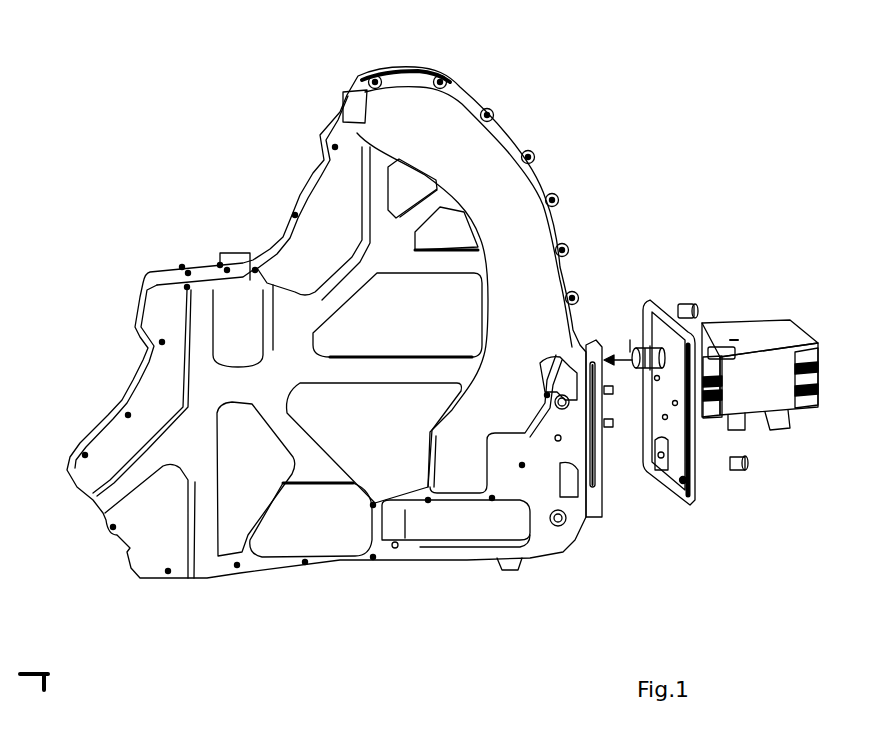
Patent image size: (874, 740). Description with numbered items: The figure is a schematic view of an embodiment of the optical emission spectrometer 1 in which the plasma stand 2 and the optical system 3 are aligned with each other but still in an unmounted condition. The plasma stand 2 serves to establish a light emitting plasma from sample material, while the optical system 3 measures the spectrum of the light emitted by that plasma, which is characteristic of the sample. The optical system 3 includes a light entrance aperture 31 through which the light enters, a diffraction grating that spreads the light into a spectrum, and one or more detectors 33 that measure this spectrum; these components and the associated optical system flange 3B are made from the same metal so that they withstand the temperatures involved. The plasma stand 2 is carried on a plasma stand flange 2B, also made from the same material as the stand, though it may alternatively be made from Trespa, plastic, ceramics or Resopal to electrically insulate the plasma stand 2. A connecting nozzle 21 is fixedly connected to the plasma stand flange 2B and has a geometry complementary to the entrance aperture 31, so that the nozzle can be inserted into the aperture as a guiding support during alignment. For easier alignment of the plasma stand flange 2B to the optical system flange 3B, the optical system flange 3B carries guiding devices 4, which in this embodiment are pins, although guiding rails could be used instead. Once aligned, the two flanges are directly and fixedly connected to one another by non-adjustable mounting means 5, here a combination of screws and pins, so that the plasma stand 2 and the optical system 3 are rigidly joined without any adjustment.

The optical emission spectrometer 1 is at (126, 176).
The plasma stand 2 is at (775, 383).
The plasma stand flange 2B is at (687, 487).
The optical system 3 is at (340, 215).
The optical system flange 3B is at (595, 490).
The guiding devices 4 is at (608, 427).
The non-adjustable mounting means 5 is at (685, 300).
The connecting nozzle 21 is at (657, 357).
The light entrance aperture 31 is at (575, 360).
The detectors 33 is at (508, 125).